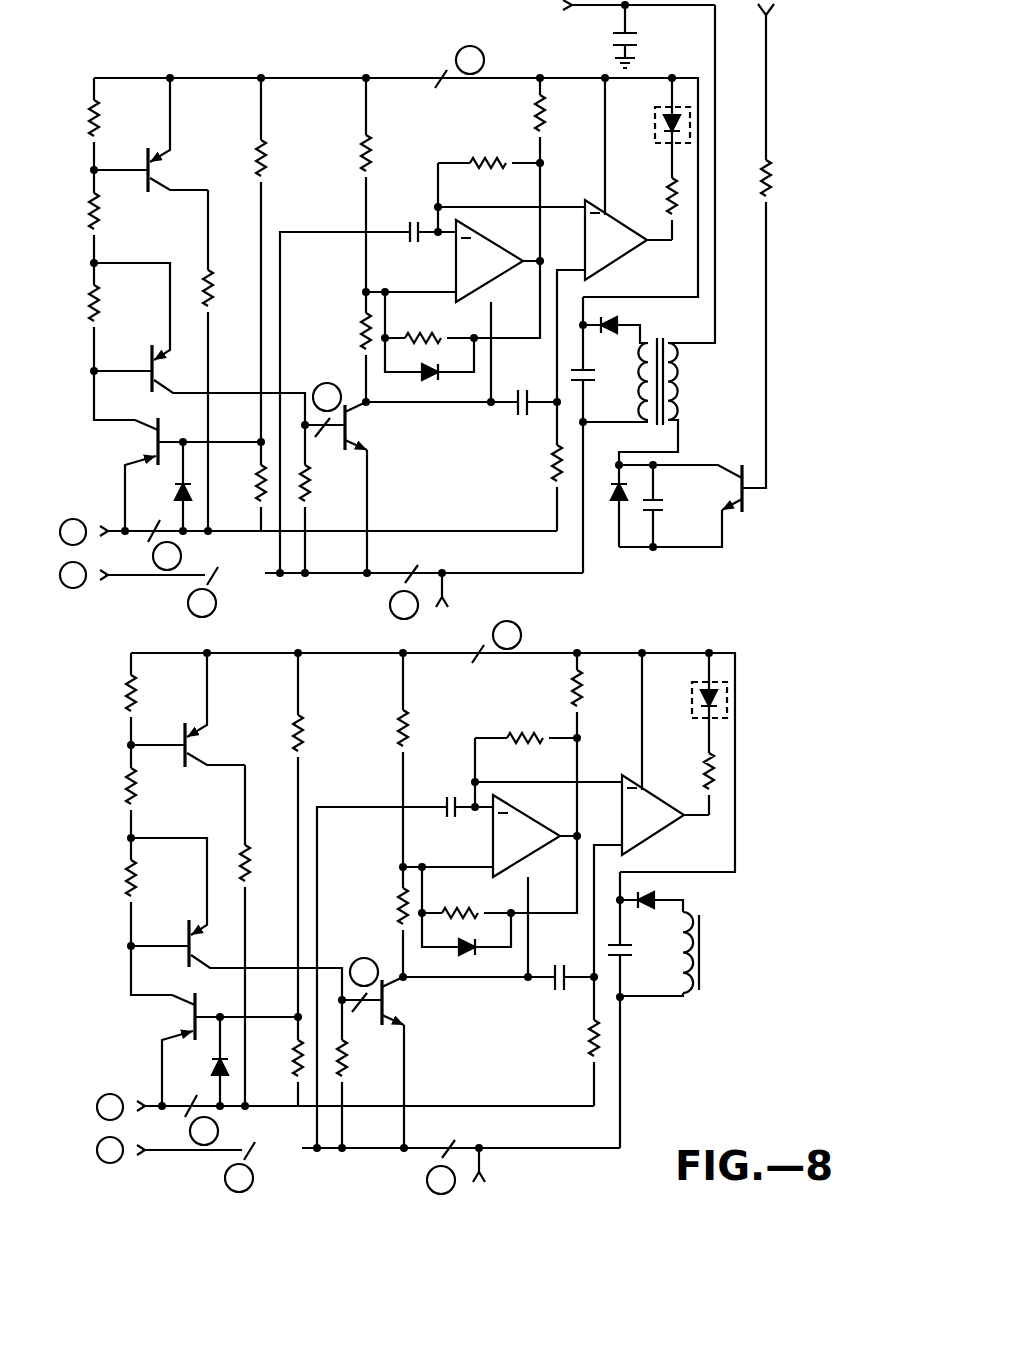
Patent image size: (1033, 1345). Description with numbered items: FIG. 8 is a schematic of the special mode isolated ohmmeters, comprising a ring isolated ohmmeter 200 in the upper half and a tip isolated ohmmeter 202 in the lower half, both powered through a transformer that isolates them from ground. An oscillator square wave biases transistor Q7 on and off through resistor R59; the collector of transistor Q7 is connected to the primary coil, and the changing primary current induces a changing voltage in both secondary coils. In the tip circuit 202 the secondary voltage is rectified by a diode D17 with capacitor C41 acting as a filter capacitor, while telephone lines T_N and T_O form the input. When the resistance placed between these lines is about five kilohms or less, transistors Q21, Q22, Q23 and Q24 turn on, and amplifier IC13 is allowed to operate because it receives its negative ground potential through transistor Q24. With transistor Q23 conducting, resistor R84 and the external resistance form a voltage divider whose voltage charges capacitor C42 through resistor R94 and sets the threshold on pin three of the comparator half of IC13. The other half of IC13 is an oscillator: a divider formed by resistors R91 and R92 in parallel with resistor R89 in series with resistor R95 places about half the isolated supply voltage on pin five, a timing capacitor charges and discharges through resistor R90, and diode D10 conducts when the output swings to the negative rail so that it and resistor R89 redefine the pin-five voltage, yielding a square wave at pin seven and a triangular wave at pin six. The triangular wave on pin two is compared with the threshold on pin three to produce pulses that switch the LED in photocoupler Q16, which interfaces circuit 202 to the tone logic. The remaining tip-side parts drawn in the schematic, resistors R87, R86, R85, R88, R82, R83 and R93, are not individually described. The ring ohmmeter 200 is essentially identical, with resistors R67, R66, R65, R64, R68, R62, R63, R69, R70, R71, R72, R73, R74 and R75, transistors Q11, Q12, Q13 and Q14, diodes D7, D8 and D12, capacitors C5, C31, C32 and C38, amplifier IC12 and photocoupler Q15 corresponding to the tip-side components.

The ring isolated ohmmeter 200 is at (152, 46).
The tip isolated ohmmeter 202 is at (440, 913).
The resistor R67 is at (123, 124).
The resistor R66 is at (118, 216).
The resistor R65 is at (118, 341).
The resistor R64 is at (234, 360).
The resistor R68 is at (284, 260).
The resistor R62 is at (239, 486).
The resistor R63 is at (332, 499).
The resistor R69 is at (388, 128).
The resistor R70 is at (489, 173).
The resistor R71 is at (532, 208).
The resistor R72 is at (420, 317).
The resistor R73 is at (651, 207).
The resistor R74 is at (535, 485).
The resistor R75 is at (345, 289).
The resistor R59 is at (747, 246).
The transistor Q11 is at (180, 474).
The transistor Q12 is at (199, 344).
The transistor Q13 is at (151, 135).
The transistor Q14 is at (351, 487).
The optocoupler Q15 is at (651, 128).
The transistor Q7 is at (692, 506).
The diode D7 is at (429, 359).
The diode D8 is at (168, 486).
The diode D12 is at (615, 319).
The capacitor C5 is at (652, 36).
The capacitor C31 is at (609, 449).
The capacitor C32 is at (461, 384).
The capacitor C38 is at (681, 506).
The operational amplifier IC12 is at (554, 261).
The resistor R87 is at (160, 699).
The resistor R86 is at (155, 791).
The resistor R85 is at (155, 916).
The resistor R84 is at (271, 935).
The resistor R88 is at (321, 835).
The resistor R82 is at (276, 1061).
The resistor R83 is at (369, 1074).
The resistor R89 is at (425, 703).
The resistor R90 is at (526, 748).
The resistor R91 is at (569, 783).
The resistor R92 is at (457, 892).
The resistor R93 is at (688, 782).
The resistor R94 is at (572, 1060).
The resistor R95 is at (382, 864).
The transistor Q21 is at (217, 1049).
The transistor Q22 is at (236, 919).
The transistor Q23 is at (188, 710).
The transistor Q24 is at (388, 1062).
The photocoupler Q16 is at (688, 703).
The diode D10 is at (466, 934).
The diode D17 is at (651, 891).
The filter capacitor C41 is at (636, 1024).
The capacitor C42 is at (498, 959).
The amplifier IC13 is at (591, 836).